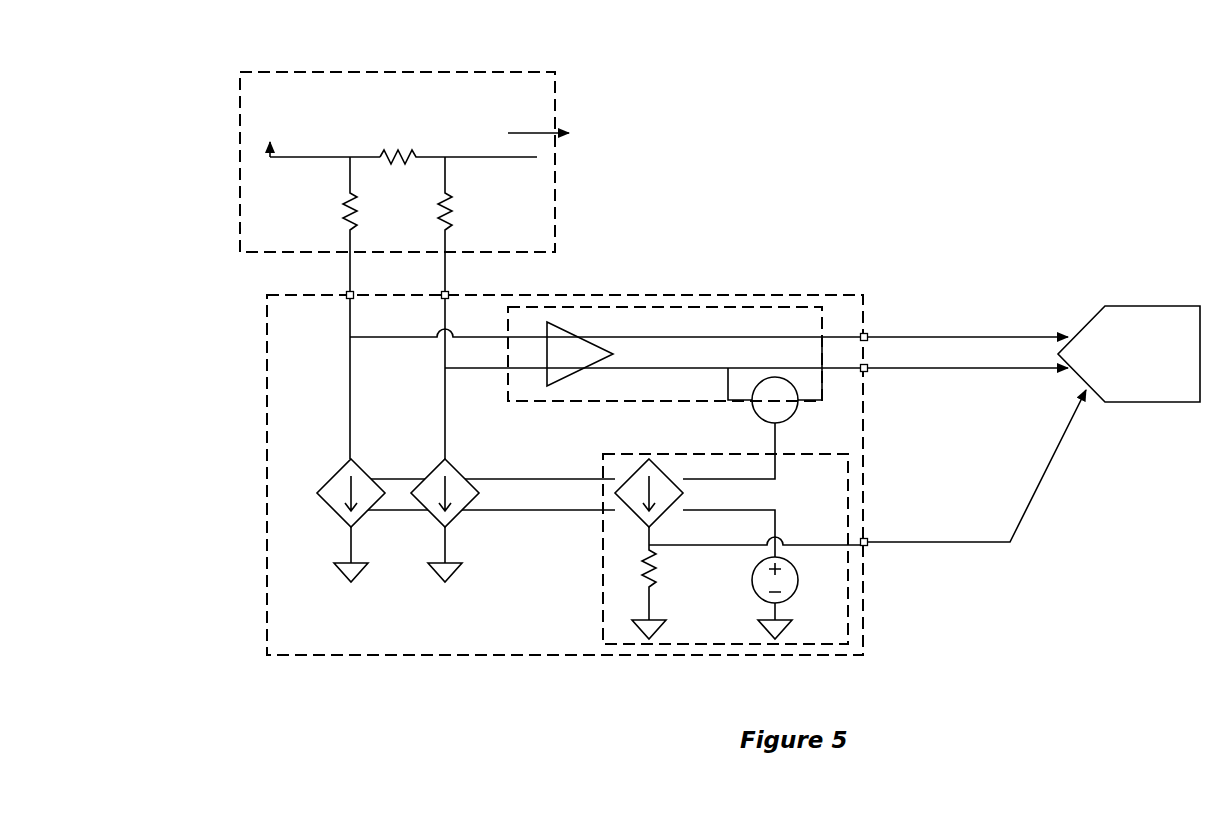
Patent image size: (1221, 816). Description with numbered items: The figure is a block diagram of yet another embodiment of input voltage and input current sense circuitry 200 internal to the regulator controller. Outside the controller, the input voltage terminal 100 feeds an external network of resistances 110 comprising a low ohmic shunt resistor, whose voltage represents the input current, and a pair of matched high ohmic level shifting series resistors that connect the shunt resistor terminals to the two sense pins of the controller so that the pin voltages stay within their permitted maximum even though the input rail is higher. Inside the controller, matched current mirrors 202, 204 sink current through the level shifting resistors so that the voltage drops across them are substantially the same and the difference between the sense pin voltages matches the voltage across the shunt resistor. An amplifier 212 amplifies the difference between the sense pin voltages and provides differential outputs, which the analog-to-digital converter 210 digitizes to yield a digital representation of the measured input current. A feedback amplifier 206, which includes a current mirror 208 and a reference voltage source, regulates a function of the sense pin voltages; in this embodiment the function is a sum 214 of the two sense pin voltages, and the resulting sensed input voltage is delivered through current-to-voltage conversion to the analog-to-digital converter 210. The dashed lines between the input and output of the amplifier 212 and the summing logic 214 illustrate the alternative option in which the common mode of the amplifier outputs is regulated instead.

The input voltage terminal 100 is at (238, 156).
The network of resistances 110 is at (557, 100).
The input voltage and input current sense circuitry 200 is at (772, 292).
The current mirror 202 is at (310, 559).
The current mirror 204 is at (415, 559).
The feedback amplifier 206 is at (601, 580).
The current mirror 208 is at (596, 492).
The analog-to-digital converter 210 is at (1034, 424).
The amplifier 212 is at (640, 354).
The sum 214 is at (734, 428).